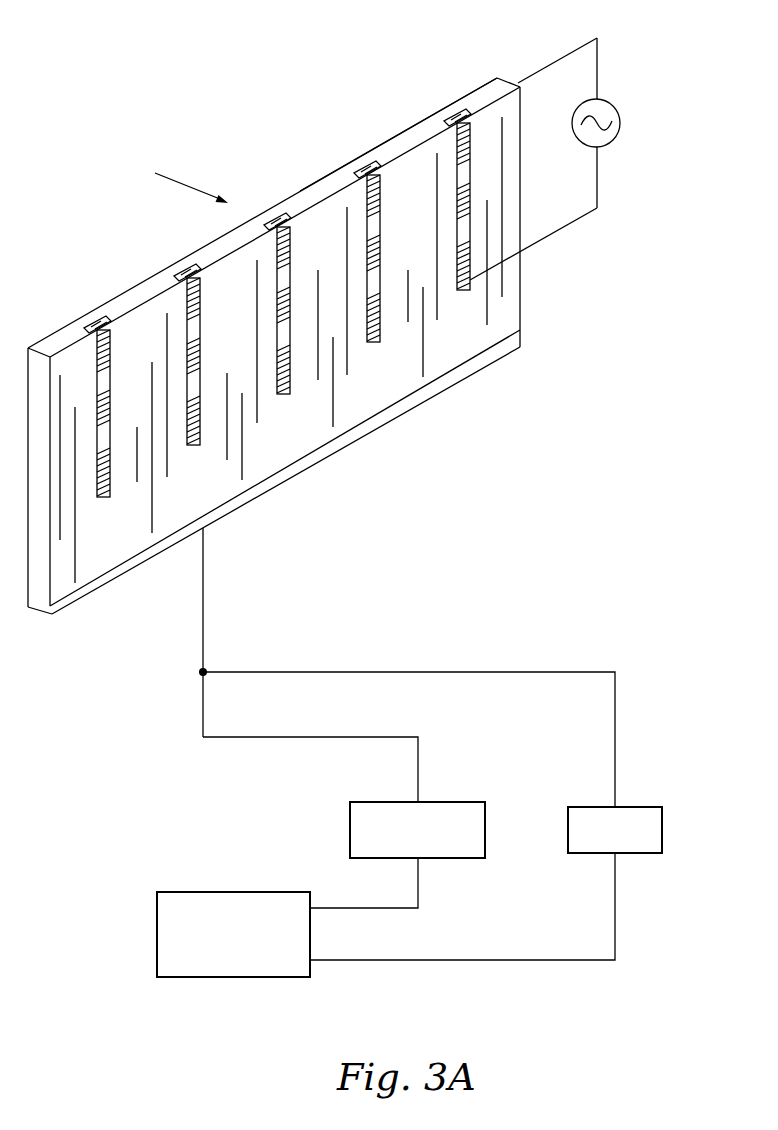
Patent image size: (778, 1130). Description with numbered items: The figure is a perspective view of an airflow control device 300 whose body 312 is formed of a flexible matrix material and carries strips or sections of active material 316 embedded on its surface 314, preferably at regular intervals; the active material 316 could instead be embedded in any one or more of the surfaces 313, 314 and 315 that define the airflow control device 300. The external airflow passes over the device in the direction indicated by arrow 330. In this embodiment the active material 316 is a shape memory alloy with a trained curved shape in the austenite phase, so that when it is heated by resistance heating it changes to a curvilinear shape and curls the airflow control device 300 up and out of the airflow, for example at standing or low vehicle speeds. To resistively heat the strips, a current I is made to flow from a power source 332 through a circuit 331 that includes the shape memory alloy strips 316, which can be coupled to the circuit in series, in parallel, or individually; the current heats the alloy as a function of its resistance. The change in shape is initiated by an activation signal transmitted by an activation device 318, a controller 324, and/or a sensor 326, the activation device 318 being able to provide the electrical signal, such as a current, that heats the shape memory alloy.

The airflow control device 300 is at (243, 122).
The arrow 330 is at (193, 187).
The body 312 is at (133, 290).
The surface 315 is at (405, 133).
The surface 313 is at (473, 90).
The surface 314 is at (107, 517).
The active material 316 is at (373, 342).
The circuit 331 is at (598, 60).
The power source 332 is at (615, 132).
The activation device 318 is at (452, 802).
The controller 324 is at (215, 892).
The sensor 326 is at (662, 822).